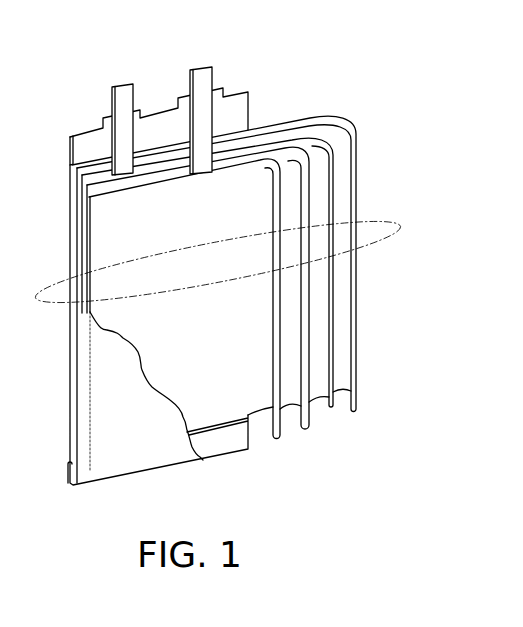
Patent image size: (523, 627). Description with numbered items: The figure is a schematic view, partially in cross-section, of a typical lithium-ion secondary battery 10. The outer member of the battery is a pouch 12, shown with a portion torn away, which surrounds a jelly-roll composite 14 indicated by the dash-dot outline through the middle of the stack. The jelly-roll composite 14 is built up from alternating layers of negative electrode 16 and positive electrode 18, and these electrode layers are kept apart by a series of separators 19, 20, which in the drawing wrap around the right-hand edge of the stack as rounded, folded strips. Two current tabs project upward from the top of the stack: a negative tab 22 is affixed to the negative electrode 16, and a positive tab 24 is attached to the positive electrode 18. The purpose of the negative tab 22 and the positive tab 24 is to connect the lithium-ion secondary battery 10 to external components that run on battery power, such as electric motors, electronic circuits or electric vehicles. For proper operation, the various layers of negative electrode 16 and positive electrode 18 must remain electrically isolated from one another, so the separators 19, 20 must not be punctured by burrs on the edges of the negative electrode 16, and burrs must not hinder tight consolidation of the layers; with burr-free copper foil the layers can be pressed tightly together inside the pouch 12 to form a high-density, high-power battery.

The lithium-ion secondary battery 10 is at (391, 87).
The pouch 12 is at (85, 443).
The jelly-roll composite 14 is at (401, 229).
The negative electrode 16 is at (291, 388).
The positive electrode 18 is at (345, 379).
The separator 19 is at (270, 172).
The separator 20 is at (316, 156).
The negative tab 22 is at (204, 68).
The positive tab 24 is at (122, 85).